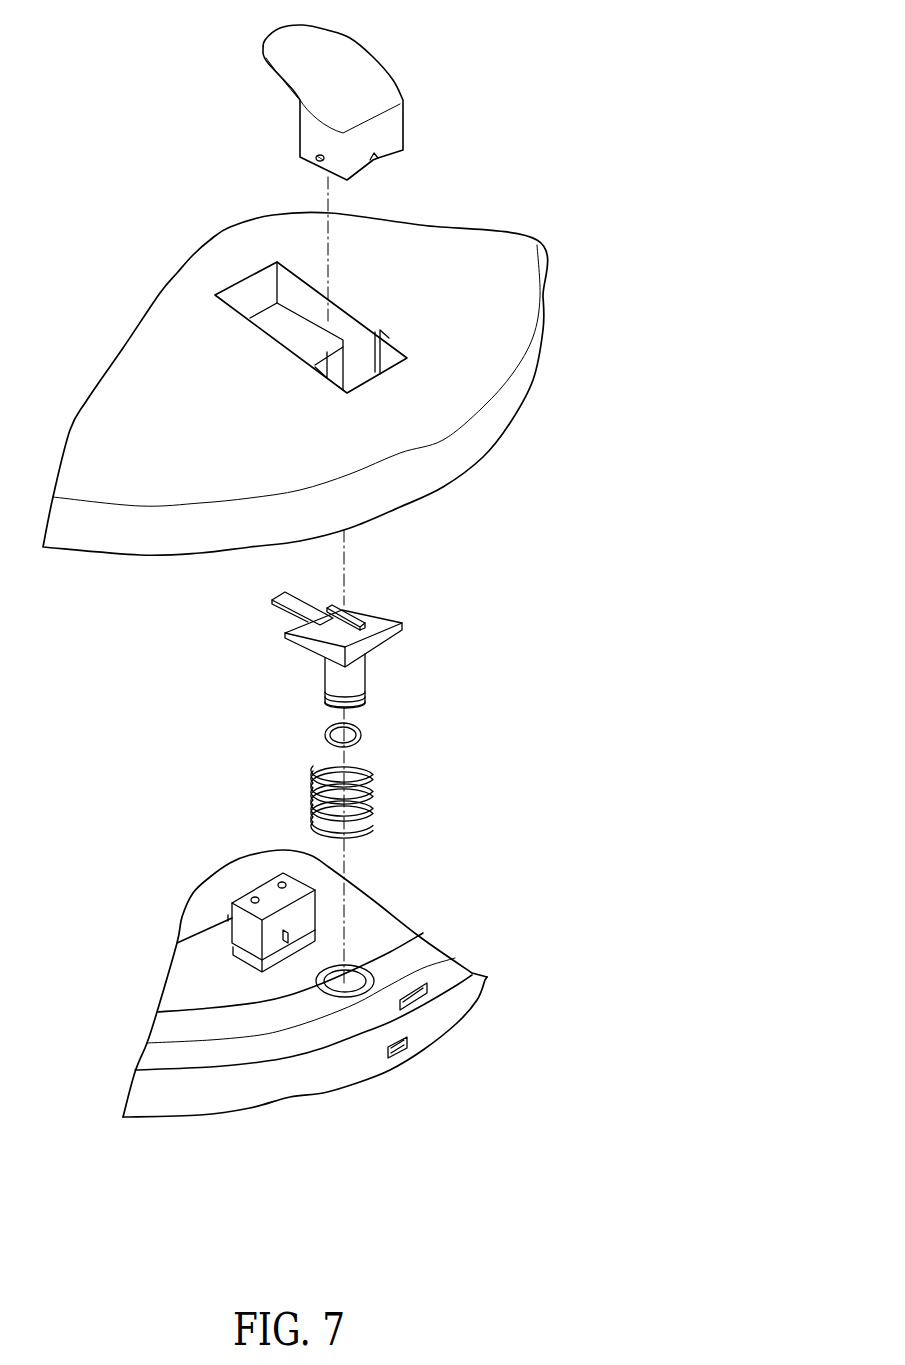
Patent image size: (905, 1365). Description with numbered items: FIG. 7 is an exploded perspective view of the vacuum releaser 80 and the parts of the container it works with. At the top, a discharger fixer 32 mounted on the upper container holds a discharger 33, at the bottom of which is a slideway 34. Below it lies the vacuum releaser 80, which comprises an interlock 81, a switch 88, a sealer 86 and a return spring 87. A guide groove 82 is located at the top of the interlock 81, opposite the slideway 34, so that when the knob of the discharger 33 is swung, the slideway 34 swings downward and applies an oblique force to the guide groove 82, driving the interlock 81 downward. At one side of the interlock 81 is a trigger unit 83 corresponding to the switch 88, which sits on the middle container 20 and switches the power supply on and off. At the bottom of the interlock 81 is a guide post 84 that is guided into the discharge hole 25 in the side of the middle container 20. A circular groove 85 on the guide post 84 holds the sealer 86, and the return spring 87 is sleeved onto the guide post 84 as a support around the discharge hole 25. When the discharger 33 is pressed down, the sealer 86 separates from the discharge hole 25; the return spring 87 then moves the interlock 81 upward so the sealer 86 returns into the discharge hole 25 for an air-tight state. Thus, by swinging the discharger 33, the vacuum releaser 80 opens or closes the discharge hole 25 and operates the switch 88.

The middle container 20 is at (457, 972).
The discharge hole 25 is at (350, 985).
The discharger fixer 32 is at (332, 320).
The discharger 33 is at (333, 88).
The slideway 34 is at (375, 160).
The vacuum releaser 80 is at (382, 757).
The interlock 81 is at (373, 623).
The guide groove 82 is at (348, 621).
The trigger unit 83 is at (280, 607).
The guide post 84 is at (357, 677).
The circular groove 85 is at (362, 693).
The sealer 86 is at (360, 738).
The return spring 87 is at (368, 797).
The switch 88 is at (287, 897).